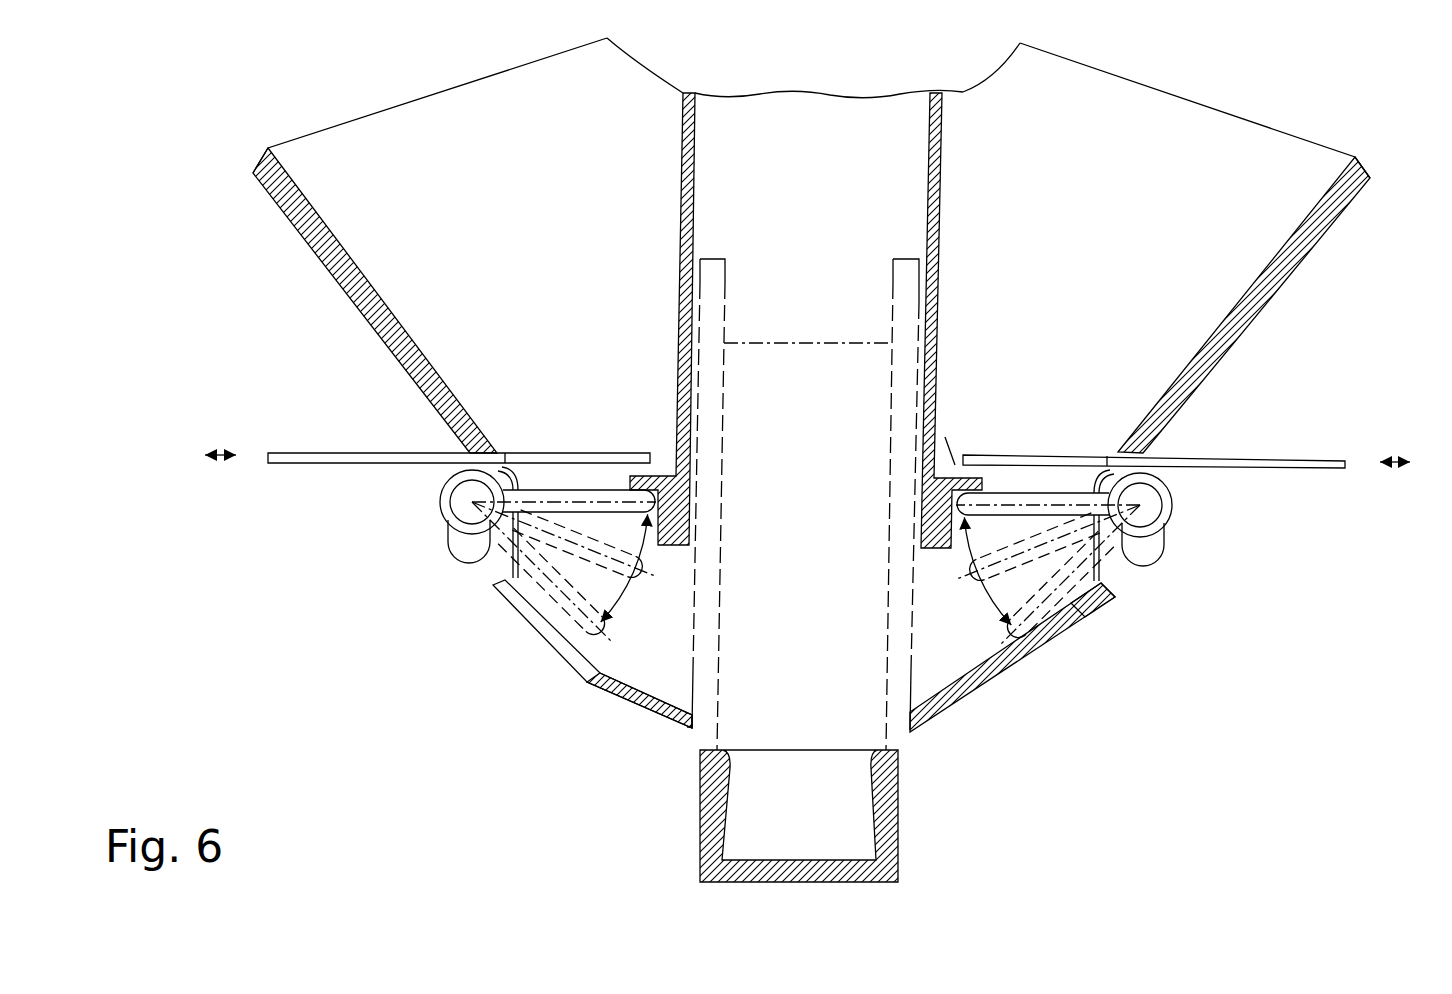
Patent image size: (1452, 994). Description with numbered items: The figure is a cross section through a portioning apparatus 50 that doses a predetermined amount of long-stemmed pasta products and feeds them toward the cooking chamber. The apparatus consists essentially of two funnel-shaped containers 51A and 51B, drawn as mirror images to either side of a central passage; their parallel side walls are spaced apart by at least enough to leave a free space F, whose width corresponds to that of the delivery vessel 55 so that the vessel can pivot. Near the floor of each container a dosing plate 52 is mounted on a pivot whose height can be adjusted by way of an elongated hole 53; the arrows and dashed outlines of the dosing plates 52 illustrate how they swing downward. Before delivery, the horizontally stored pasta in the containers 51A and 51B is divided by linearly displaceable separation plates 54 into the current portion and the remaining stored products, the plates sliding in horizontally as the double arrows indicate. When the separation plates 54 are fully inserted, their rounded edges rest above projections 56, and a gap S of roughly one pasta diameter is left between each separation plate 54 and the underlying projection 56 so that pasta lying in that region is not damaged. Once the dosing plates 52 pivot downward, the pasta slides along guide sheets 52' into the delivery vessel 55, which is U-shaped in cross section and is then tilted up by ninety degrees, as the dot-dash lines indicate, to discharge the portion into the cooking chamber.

The portioning apparatus 50 is at (824, 460).
The funnel-shaped container 51A is at (553, 294).
The funnel-shaped container 51B is at (1063, 303).
The dosing plate 52 is at (767, 564).
The guide sheet 52' is at (769, 670).
The elongated hole 53 is at (1138, 547).
The separation plate 54 is at (313, 463).
The delivery vessel 55 is at (807, 430).
The projection 56 is at (1107, 595).
The free space F is at (802, 156).
The gap S is at (945, 437).